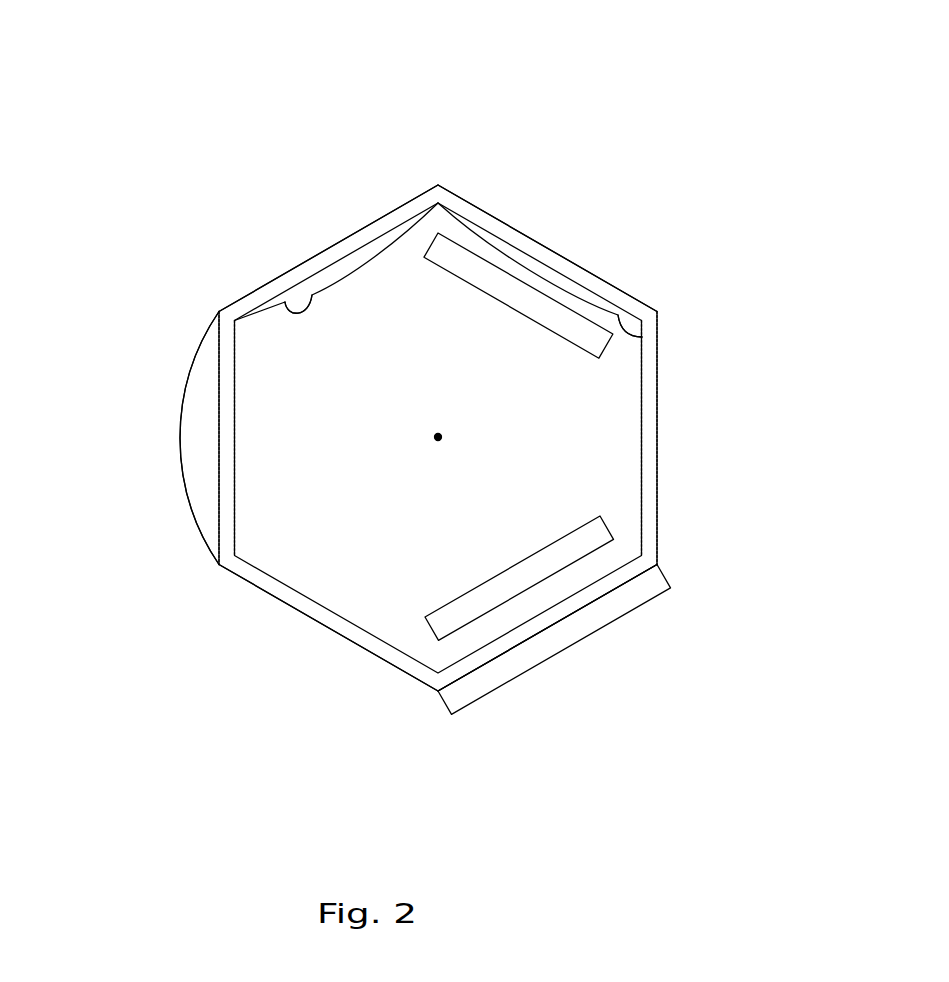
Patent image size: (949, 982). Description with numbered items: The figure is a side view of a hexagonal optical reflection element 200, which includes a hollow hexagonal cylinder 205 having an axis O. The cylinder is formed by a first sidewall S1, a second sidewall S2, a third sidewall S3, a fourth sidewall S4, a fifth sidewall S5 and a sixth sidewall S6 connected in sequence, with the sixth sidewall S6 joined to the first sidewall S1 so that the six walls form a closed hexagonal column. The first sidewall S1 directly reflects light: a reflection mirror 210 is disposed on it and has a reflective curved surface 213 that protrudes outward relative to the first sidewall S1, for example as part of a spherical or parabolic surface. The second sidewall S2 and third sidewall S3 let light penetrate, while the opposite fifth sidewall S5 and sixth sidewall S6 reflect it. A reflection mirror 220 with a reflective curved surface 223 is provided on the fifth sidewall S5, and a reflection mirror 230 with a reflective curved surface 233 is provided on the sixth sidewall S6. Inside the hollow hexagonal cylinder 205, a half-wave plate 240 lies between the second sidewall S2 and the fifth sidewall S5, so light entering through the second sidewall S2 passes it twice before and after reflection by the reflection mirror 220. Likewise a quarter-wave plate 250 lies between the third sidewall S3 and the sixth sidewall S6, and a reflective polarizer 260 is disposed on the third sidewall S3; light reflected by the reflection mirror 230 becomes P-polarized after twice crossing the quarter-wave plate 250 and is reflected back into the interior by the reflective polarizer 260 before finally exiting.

The hexagonal optical reflection element 200 is at (120, 149).
The hollow hexagonal cylinder 205 is at (913, 41).
The reflection mirror 210 is at (195, 428).
The reflective curved surface 213 is at (182, 463).
The reflection mirror 220 is at (558, 275).
The reflective curved surface 223 is at (642, 337).
The reflection mirror 230 is at (337, 270).
The reflective curved surface 233 is at (283, 297).
The half-wave plate 240 is at (607, 348).
The quarter-wave plate 250 is at (578, 548).
The reflective polarizer 260 is at (522, 658).
The first sidewall S1 is at (225, 389).
The second sidewall S2 is at (333, 625).
The third sidewall S3 is at (555, 613).
The fourth sidewall S4 is at (652, 430).
The fifth sidewall S5 is at (518, 238).
The sixth sidewall S6 is at (357, 237).
The axis O is at (440, 430).